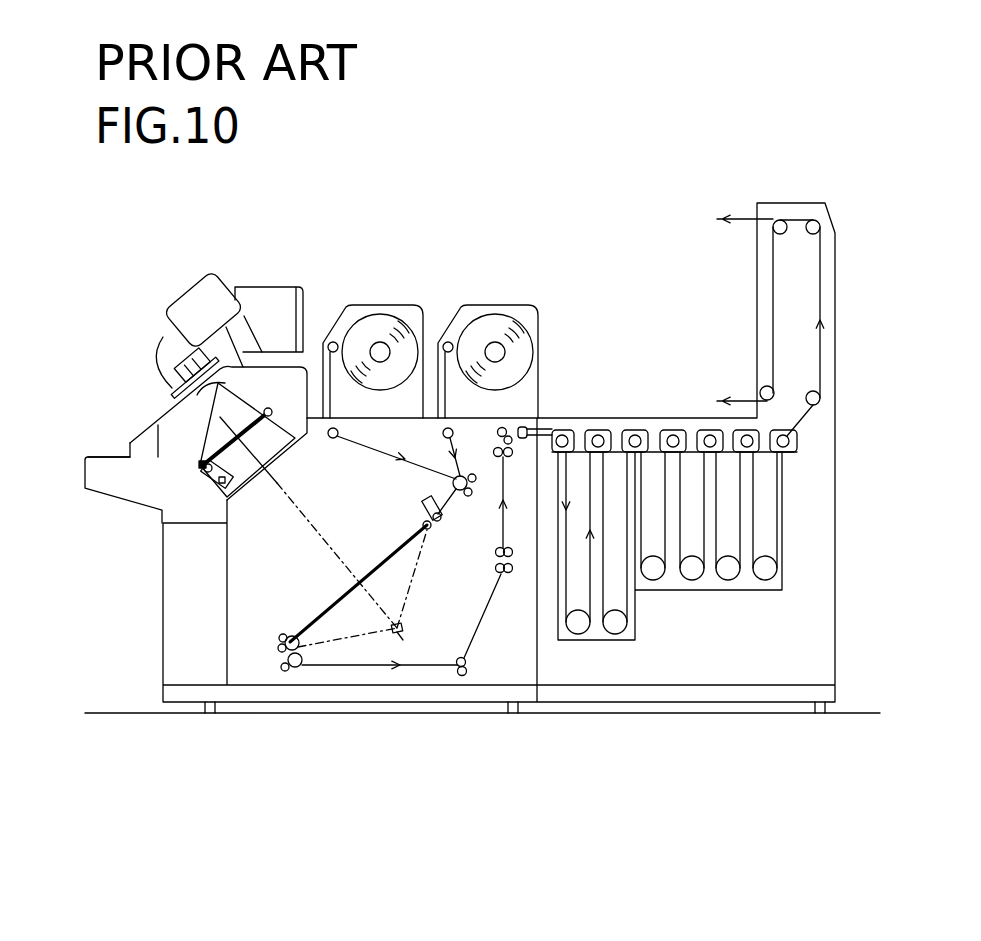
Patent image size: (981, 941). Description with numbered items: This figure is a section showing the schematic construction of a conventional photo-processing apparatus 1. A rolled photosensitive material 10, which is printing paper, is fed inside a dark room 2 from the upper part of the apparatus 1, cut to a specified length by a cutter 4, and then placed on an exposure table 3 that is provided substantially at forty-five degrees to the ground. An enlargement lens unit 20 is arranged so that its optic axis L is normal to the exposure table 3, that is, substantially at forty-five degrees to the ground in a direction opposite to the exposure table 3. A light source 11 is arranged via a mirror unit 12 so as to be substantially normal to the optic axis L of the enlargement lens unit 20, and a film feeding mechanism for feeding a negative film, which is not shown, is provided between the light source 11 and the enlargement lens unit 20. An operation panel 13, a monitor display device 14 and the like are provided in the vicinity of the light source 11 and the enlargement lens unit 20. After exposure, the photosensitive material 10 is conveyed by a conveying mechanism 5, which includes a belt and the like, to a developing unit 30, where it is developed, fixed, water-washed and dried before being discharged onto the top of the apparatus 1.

The photo-processing apparatus 1 is at (578, 410).
The dark room 2 is at (502, 663).
The exposure table 3 is at (325, 615).
The cutter 4 is at (440, 518).
The conveying mechanism 5 is at (428, 667).
The rolled photosensitive material 10 is at (495, 318).
The light source 11 is at (200, 287).
The mirror unit 12 is at (160, 350).
The operation panel 13 is at (100, 455).
The monitor display device 14 is at (272, 300).
The enlargement lens unit 20 is at (190, 420).
The developing unit 30 is at (632, 665).
The optic axis L is at (320, 538).